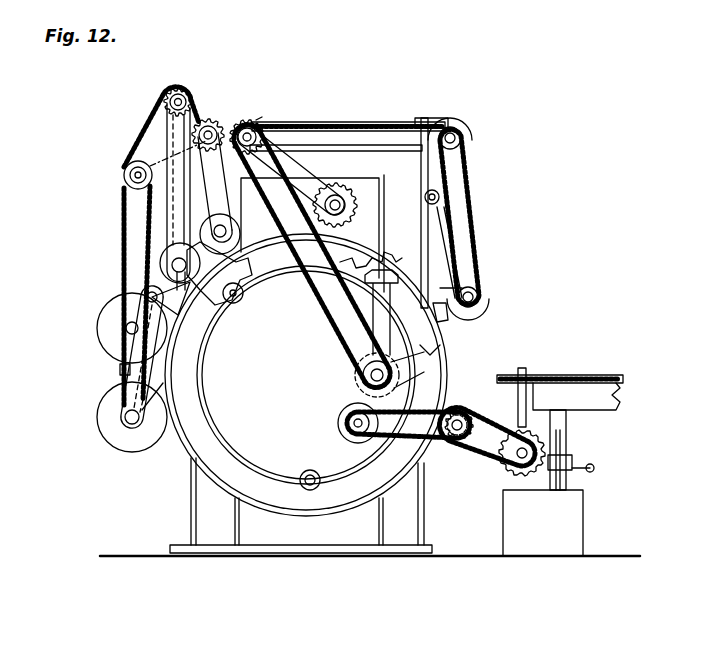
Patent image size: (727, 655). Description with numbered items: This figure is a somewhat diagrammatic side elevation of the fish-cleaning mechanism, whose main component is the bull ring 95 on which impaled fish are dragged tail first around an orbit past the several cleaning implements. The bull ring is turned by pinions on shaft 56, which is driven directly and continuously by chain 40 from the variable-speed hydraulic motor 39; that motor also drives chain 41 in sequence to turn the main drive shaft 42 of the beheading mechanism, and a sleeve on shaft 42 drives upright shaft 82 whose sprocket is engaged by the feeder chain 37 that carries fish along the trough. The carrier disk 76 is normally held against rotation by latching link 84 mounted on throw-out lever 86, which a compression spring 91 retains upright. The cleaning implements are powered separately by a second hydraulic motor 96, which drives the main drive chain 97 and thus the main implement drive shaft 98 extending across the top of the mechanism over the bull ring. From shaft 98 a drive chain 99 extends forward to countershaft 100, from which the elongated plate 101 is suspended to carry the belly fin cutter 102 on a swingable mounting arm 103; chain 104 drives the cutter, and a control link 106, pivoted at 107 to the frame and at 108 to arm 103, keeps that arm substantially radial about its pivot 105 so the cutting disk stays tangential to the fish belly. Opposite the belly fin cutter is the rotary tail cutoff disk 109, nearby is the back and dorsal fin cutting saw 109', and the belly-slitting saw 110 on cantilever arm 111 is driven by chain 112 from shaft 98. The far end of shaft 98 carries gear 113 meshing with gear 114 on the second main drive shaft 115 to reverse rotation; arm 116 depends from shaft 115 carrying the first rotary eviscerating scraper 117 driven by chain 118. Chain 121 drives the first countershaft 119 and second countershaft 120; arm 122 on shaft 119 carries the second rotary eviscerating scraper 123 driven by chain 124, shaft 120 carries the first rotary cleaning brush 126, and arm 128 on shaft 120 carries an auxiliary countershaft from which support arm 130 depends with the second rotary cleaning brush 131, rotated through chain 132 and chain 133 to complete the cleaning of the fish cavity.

The chain 37 is at (590, 375).
The variable-speed hydraulic motor 39 is at (338, 424).
The chain 40 is at (368, 441).
The chain 41 is at (500, 428).
The main drive shaft 42 is at (532, 474).
The shaft 56 is at (455, 442).
The carrier disk 76 is at (505, 472).
The upright shaft 82 is at (516, 395).
The latching link 84 is at (560, 457).
The throw-out lever 86 is at (562, 442).
The compression spring 91 is at (594, 468).
The bull ring 95 is at (245, 295).
The hydraulic motor 96 is at (363, 379).
The main drive chain 97 is at (335, 328).
The main implement drive shaft 98 is at (267, 124).
The drive chain 99 is at (370, 121).
The countershaft 100 is at (462, 136).
The elongated plate 101 is at (464, 269).
The belly fin cutter 102 is at (447, 320).
The mounting arm 103 is at (479, 317).
The chain 104 is at (484, 193).
The pivot 105 is at (479, 298).
The control link 106 is at (447, 247).
The pivot 107 is at (440, 199).
The pivot 108 is at (376, 268).
The rotary tail cutoff disk 109 is at (466, 351).
The back and dorsal fin cutting saw 109' is at (333, 233).
The belly-slitting saw 110 is at (358, 207).
The cantilever arm 111 is at (322, 186).
The chain 112 is at (318, 148).
The gear 113 is at (264, 119).
The gear 114 is at (210, 119).
The second main drive shaft 115 is at (249, 119).
The arm 116 is at (216, 193).
The first rotary eviscerating scraper 117 is at (240, 250).
The drive chain 118 is at (230, 226).
The first countershaft 119 is at (186, 96).
The second countershaft 120 is at (124, 176).
The chain 121 is at (163, 106).
The arm 122 is at (168, 132).
The second rotary eviscerating scraper 123 is at (168, 262).
The chain 124 is at (148, 157).
The first rotary cleaning brush 126 is at (97, 323).
The arm 128 is at (121, 216).
The support arm 130 is at (127, 372).
The second rotary cleaning brush 131 is at (97, 410).
The chain 132 is at (146, 238).
The chain 133 is at (118, 368).